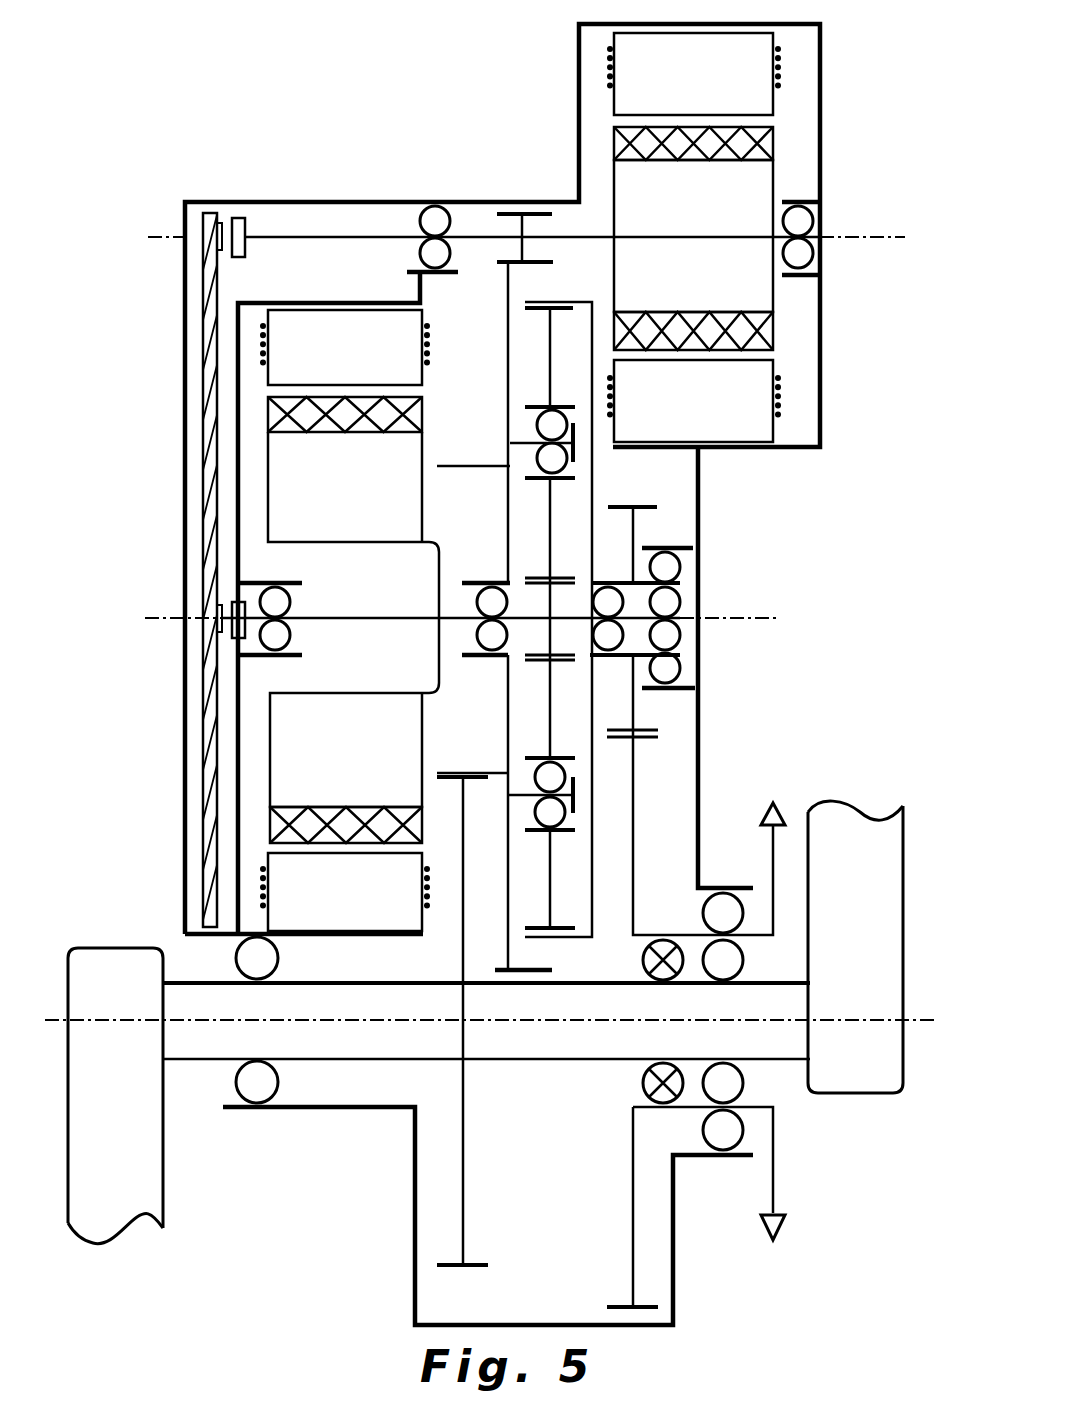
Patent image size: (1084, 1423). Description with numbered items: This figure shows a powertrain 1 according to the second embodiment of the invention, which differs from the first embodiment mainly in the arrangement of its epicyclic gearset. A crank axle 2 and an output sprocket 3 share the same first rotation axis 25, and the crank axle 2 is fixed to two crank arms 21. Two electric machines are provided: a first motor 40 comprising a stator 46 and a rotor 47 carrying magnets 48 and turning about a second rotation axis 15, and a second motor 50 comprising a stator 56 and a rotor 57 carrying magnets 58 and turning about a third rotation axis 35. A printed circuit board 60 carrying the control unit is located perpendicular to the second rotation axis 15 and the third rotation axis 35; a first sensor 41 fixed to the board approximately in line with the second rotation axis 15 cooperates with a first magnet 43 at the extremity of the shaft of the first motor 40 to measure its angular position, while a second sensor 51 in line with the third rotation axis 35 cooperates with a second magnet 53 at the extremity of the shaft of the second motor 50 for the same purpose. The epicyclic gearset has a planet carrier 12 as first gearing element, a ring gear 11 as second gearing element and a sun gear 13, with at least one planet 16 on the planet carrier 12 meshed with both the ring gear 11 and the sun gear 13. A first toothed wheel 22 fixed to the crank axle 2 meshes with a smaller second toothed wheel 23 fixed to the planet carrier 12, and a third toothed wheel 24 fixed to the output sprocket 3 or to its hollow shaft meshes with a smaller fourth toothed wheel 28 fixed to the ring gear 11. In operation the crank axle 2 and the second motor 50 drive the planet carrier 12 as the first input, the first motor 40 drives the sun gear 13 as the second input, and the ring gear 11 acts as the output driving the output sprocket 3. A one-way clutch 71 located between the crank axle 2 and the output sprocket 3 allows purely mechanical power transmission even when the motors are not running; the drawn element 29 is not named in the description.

The powertrain 1 is at (856, 108).
The crank axle 2 is at (230, 1038).
The output sprocket 3 is at (775, 1178).
The ring gear 11 is at (595, 485).
The planet carrier 12 is at (505, 510).
The sun gear 13 is at (556, 602).
The second rotation axis 15 is at (749, 611).
The planet 16 is at (507, 325).
The crank arms 21 is at (862, 900).
The first toothed wheel 22 is at (465, 1137).
The second toothed wheel 23 is at (482, 465).
The third toothed wheel 24 is at (635, 1265).
The first rotation axis 25 is at (910, 1020).
The fourth toothed wheel 28 is at (636, 707).
The gear 29 is at (526, 233).
The third rotation axis 35 is at (873, 233).
The first motor 40 is at (310, 733).
The first sensor 41 is at (218, 613).
The first magnet 43 is at (236, 628).
The stator 46 is at (320, 897).
The rotor 47 is at (315, 788).
The magnets 48 is at (305, 412).
The second motor 50 is at (740, 190).
The second sensor 51 is at (219, 236).
The second magnet 53 is at (238, 227).
The stator 56 is at (738, 70).
The rotor 57 is at (745, 272).
The magnets 58 is at (750, 325).
The printed circuit board 60 is at (208, 327).
The one-way clutch 71 is at (660, 940).